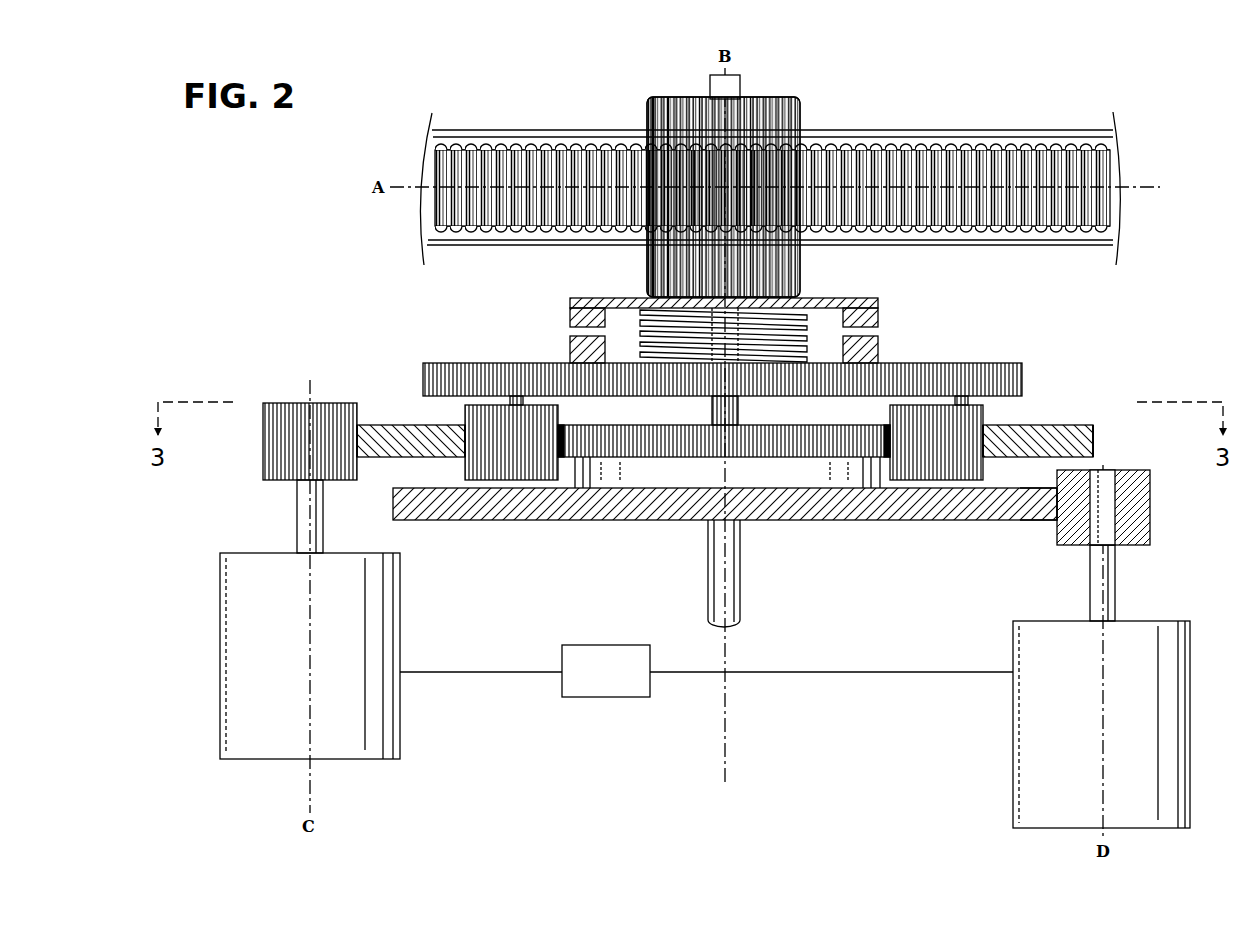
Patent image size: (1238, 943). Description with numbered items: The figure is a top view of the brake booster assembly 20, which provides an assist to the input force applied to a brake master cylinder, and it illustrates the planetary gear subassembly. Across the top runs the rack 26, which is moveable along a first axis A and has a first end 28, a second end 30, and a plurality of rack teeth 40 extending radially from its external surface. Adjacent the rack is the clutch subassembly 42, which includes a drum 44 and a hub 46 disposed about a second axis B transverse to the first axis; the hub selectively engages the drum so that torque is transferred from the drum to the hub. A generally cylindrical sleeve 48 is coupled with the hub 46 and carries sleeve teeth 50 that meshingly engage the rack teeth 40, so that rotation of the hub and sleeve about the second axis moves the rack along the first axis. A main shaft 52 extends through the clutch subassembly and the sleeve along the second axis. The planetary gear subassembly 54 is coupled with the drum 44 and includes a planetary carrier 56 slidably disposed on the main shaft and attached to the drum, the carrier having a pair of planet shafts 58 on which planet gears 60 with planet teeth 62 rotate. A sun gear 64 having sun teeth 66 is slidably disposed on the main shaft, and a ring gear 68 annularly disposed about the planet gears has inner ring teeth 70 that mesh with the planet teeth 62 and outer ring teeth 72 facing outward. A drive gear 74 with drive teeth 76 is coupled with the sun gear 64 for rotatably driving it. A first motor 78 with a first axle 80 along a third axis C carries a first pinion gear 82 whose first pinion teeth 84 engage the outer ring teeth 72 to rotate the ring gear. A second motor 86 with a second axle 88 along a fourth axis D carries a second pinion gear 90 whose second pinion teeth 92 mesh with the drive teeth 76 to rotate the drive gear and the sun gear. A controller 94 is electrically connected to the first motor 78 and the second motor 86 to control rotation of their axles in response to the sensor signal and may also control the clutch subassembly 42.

The brake booster assembly 20 is at (1145, 90).
The rack 26 is at (946, 138).
The first end 28 is at (426, 165).
The second end 30 is at (1119, 160).
The rack teeth 40 is at (543, 143).
The clutch subassembly 42 is at (938, 305).
The drum 44 is at (870, 348).
The hub 46 is at (866, 312).
The sleeve 48 is at (769, 97).
The sleeve teeth 50 is at (678, 106).
The main shaft 52 is at (740, 565).
The planetary gear subassembly 54 is at (1062, 372).
The planetary carrier 56 is at (992, 363).
The planet shafts 58 is at (506, 399).
The planet gears 60 is at (481, 481).
The planet teeth 62 is at (553, 430).
The sun gear 64 is at (800, 433).
The sun teeth 66 is at (568, 447).
The ring gear 68 is at (418, 432).
The inner ring teeth 70 is at (440, 445).
The outer ring teeth 72 is at (363, 452).
The drive gear 74 is at (610, 521).
The drive teeth 76 is at (1030, 521).
The first motor 78 is at (310, 656).
The first axle 80 is at (297, 521).
The first pinion gear 82 is at (268, 410).
The first pinion teeth 84 is at (282, 446).
The second motor 86 is at (1101, 724).
The second axle 88 is at (1117, 588).
The second pinion gear 90 is at (1125, 470).
The second pinion teeth 92 is at (1135, 525).
The controller 94 is at (706, 671).